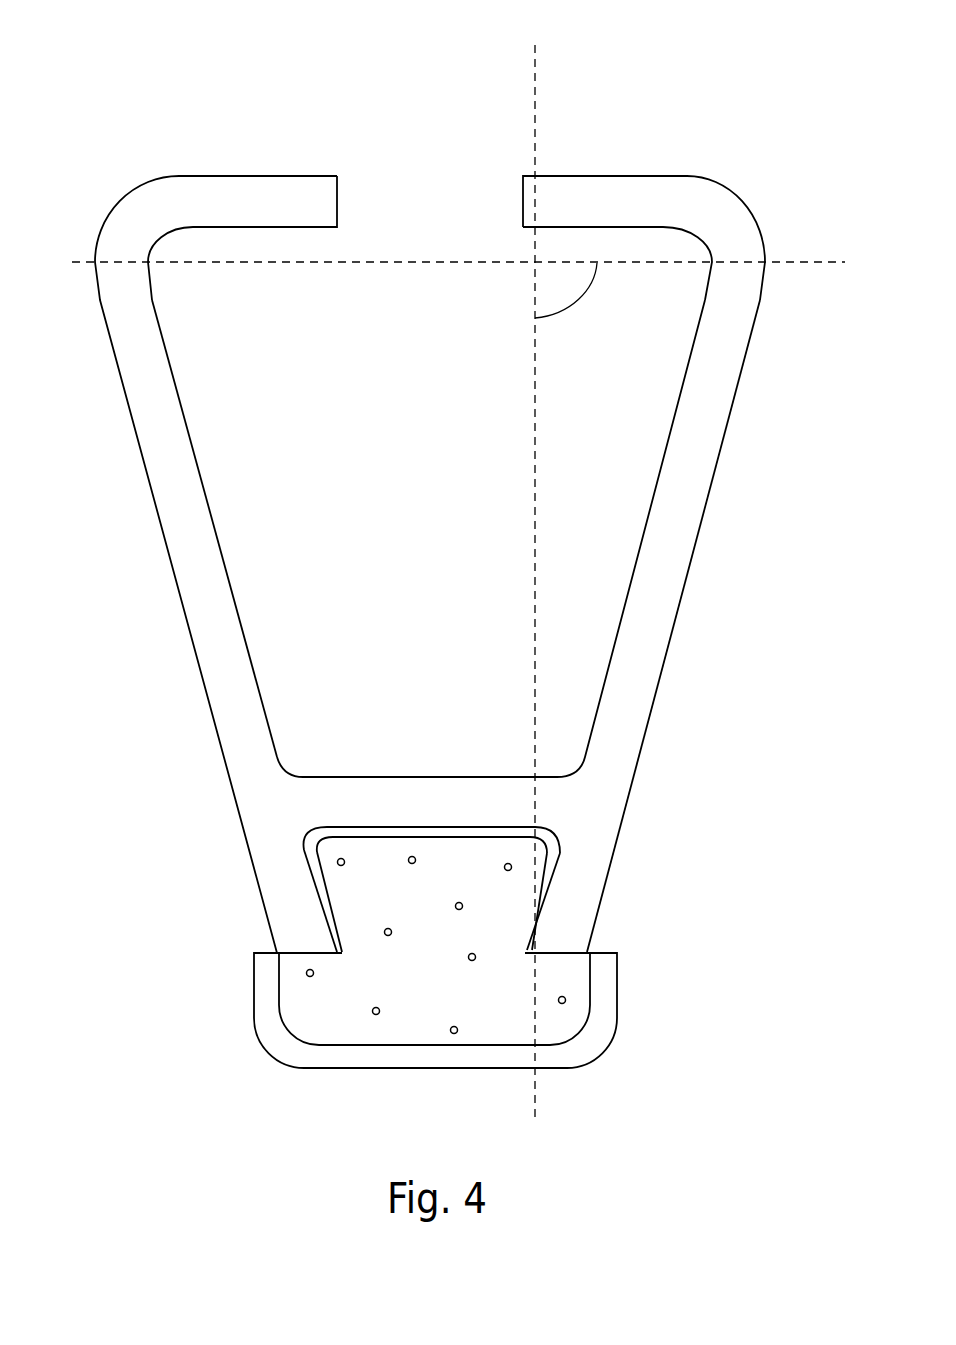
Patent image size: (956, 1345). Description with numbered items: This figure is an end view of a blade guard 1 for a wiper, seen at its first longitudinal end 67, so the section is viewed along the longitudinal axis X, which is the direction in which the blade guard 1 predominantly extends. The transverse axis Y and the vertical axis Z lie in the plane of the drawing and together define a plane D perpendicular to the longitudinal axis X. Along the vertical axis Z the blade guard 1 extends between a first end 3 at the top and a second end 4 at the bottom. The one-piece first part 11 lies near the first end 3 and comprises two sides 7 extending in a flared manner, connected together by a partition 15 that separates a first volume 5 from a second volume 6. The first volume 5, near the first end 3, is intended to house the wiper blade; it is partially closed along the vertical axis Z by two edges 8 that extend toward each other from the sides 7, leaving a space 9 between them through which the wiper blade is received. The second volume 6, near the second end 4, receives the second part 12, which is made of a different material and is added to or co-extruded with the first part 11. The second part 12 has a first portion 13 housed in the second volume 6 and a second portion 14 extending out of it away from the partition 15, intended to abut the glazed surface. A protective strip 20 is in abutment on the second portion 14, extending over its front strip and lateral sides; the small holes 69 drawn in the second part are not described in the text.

The blade guard 1 is at (278, 163).
The first end 3 is at (405, 148).
The second end 4 is at (403, 1095).
The first volume 5 is at (580, 687).
The second volume 6 is at (553, 885).
The sides 7 is at (225, 682).
The edges 8 is at (323, 195).
The space 9 is at (377, 193).
The first part 11 is at (231, 210).
The second part 12 is at (350, 990).
The first portion 13 is at (355, 905).
The second portion 14 is at (565, 978).
The partition 15 is at (357, 798).
The protective strip 20 is at (587, 1047).
The first longitudinal end 67 is at (118, 420).
The holes 69 is at (371, 1010).
The longitudinal axis X is at (432, 181).
The transverse axis Y is at (800, 263).
The vertical axis Z is at (530, 1090).
The plane D is at (563, 287).